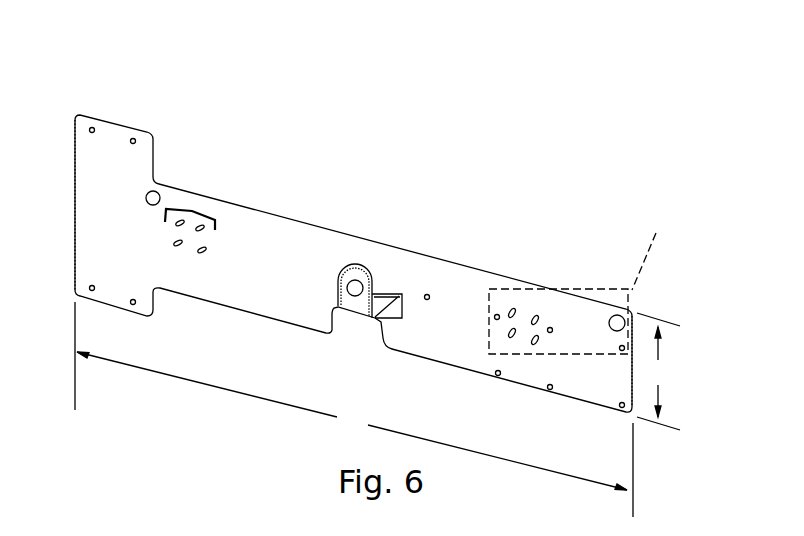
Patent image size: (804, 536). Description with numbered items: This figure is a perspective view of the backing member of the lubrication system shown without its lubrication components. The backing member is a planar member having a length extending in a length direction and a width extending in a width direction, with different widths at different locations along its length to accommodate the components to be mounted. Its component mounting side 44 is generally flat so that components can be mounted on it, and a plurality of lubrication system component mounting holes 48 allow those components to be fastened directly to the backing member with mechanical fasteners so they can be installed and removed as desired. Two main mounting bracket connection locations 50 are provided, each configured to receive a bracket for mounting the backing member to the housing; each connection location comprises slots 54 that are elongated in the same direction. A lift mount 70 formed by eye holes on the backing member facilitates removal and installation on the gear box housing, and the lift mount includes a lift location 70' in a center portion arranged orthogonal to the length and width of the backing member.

The component mounting side 44 is at (377, 316).
The lubrication system component mounting holes 48 is at (133, 138).
The lift mount 70 is at (177, 137).
The lift location 70' is at (376, 237).
The main mounting bracket connection location 50 is at (192, 210).
The slot 54 is at (202, 252).